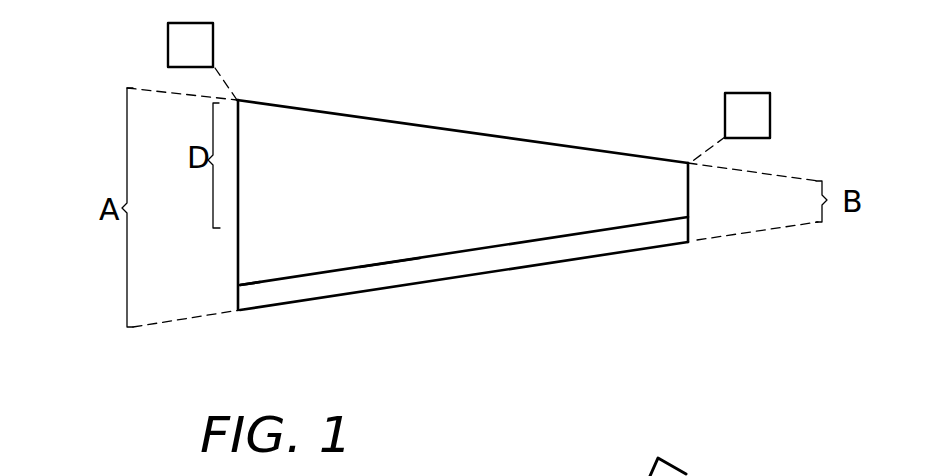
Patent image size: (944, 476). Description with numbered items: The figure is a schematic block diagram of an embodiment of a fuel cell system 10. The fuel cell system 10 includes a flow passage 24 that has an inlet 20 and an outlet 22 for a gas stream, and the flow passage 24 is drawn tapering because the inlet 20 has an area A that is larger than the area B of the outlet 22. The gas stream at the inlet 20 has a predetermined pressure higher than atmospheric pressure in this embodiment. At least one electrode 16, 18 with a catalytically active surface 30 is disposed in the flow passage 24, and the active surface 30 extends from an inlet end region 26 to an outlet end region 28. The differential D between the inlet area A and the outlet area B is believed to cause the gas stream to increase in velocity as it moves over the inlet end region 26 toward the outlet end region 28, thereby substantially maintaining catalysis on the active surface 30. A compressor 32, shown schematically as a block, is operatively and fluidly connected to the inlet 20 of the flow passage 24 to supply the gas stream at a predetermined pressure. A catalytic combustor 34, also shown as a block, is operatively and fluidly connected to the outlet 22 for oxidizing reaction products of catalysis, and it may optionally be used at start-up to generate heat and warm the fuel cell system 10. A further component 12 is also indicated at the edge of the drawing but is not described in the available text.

The fuel cell system 10 is at (471, 207).
The adjacent component 12 is at (688, 471).
The electrode 16 is at (504, 276).
The electrode 18 is at (504, 276).
The inlet 20 is at (237, 252).
The outlet 22 is at (690, 193).
The flow passage 24 is at (395, 121).
The inlet end region 26 is at (268, 277).
The outlet end region 28 is at (657, 215).
The catalytically active surface 30 is at (392, 248).
The compressor 32 is at (168, 40).
The catalytic combustor 34 is at (757, 93).